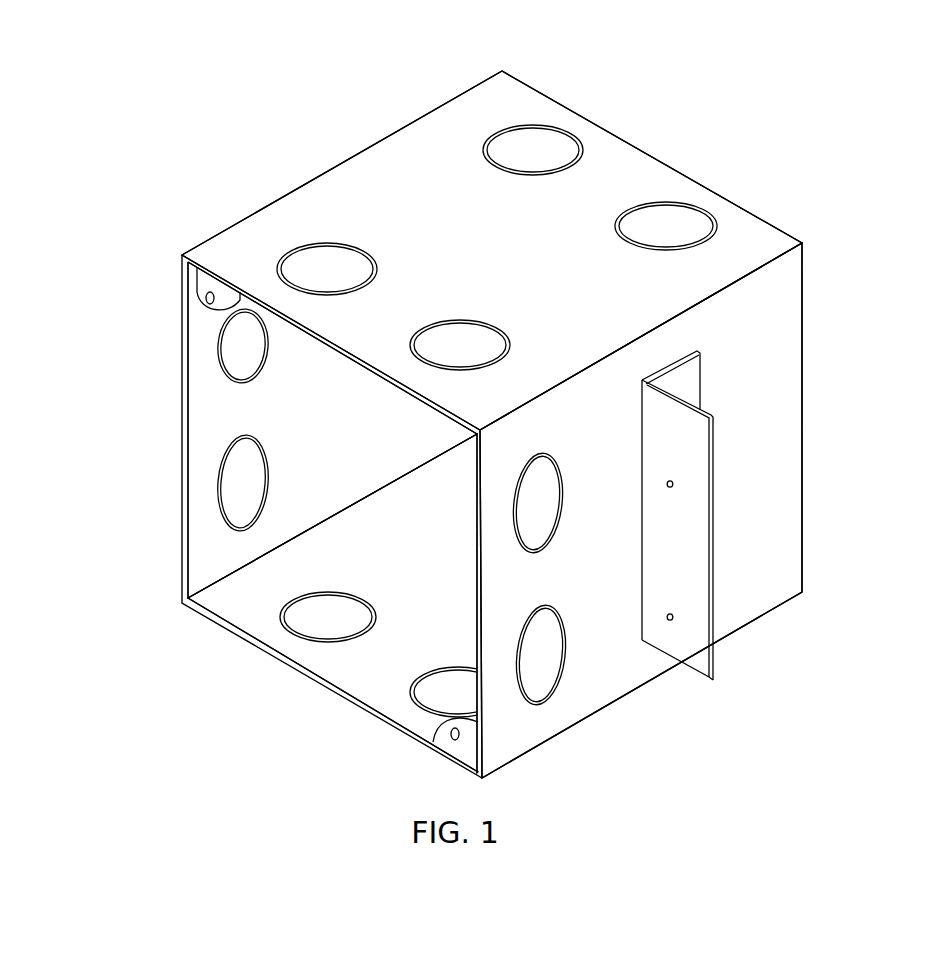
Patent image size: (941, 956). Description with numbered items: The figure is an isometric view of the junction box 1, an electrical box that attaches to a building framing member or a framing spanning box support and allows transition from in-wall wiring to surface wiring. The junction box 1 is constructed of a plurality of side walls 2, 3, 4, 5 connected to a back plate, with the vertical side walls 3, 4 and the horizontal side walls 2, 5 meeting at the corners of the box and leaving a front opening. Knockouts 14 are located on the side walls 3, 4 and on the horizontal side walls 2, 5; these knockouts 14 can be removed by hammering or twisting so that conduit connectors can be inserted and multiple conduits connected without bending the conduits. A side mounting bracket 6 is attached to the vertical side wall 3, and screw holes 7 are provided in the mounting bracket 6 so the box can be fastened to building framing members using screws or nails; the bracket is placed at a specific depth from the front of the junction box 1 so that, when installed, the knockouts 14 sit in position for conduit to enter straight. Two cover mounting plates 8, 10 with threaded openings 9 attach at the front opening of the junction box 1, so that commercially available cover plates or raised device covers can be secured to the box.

The junction box 1 is at (806, 240).
The side wall 2 is at (378, 173).
The side wall 3 is at (605, 672).
The side wall 4 is at (300, 417).
The side wall 5 is at (432, 562).
The side mounting bracket 6 is at (680, 547).
The screw holes 7 is at (674, 487).
The cover mounting plate 8 is at (460, 747).
The threaded opening 9 is at (205, 300).
The cover mounting plate 10 is at (197, 283).
The knockouts 14 is at (532, 145).